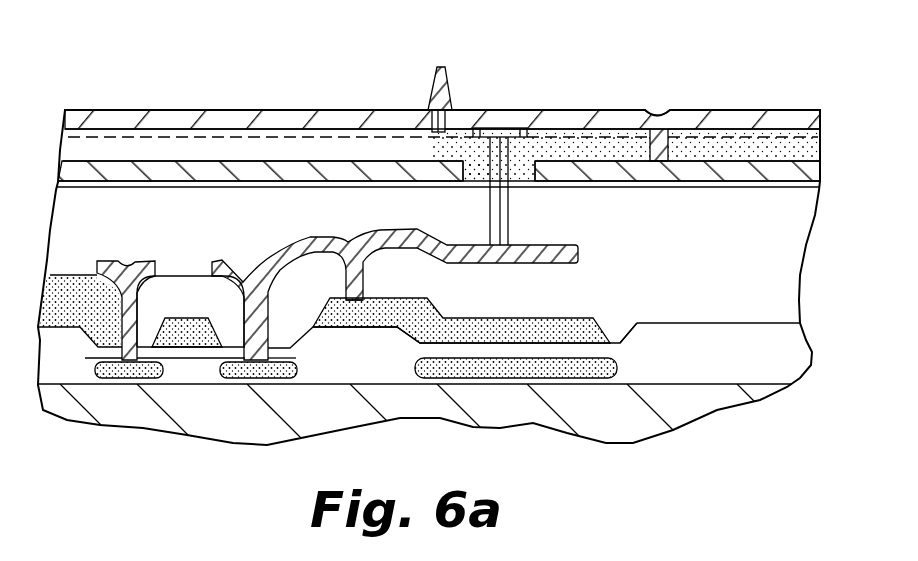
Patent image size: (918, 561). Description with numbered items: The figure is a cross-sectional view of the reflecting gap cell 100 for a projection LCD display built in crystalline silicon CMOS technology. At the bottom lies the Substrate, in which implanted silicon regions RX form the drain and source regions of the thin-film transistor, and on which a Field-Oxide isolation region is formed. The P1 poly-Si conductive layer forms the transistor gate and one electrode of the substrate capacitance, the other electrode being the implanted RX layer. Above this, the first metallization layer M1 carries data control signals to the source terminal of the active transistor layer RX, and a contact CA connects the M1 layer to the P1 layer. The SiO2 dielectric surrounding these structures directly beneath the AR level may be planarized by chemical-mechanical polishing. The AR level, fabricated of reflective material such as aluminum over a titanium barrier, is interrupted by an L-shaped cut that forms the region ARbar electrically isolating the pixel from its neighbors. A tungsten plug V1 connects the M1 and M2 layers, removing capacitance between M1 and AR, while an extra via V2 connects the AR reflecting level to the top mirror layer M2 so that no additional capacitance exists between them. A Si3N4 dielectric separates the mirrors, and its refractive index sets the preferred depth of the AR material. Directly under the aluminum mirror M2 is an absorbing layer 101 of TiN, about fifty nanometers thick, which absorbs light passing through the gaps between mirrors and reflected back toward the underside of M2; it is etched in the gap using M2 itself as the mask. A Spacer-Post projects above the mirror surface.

The reflecting gap cell 100 is at (702, 57).
The absorbing TiN layer 101 is at (278, 133).
The third level metallization layer M2 is at (95, 123).
The AR level AR is at (192, 173).
The AR-bar region ARbar is at (480, 162).
The spacer post Spacer-Post is at (433, 90).
The titanium-nitride TiN is at (577, 130).
The silicon nitride dielectric Si3N4 is at (791, 143).
The tungsten plug V1 is at (508, 213).
The via V2 is at (650, 180).
The first metallization layer M1 is at (217, 260).
The silicon dioxide layer SiO2 is at (718, 275).
The contact CA is at (362, 303).
The P1 poly-Si conductive layer P1 is at (604, 325).
The RX region RX is at (238, 367).
The silicon substrate Substrate is at (113, 410).
The field oxide Field-Oxide is at (722, 353).